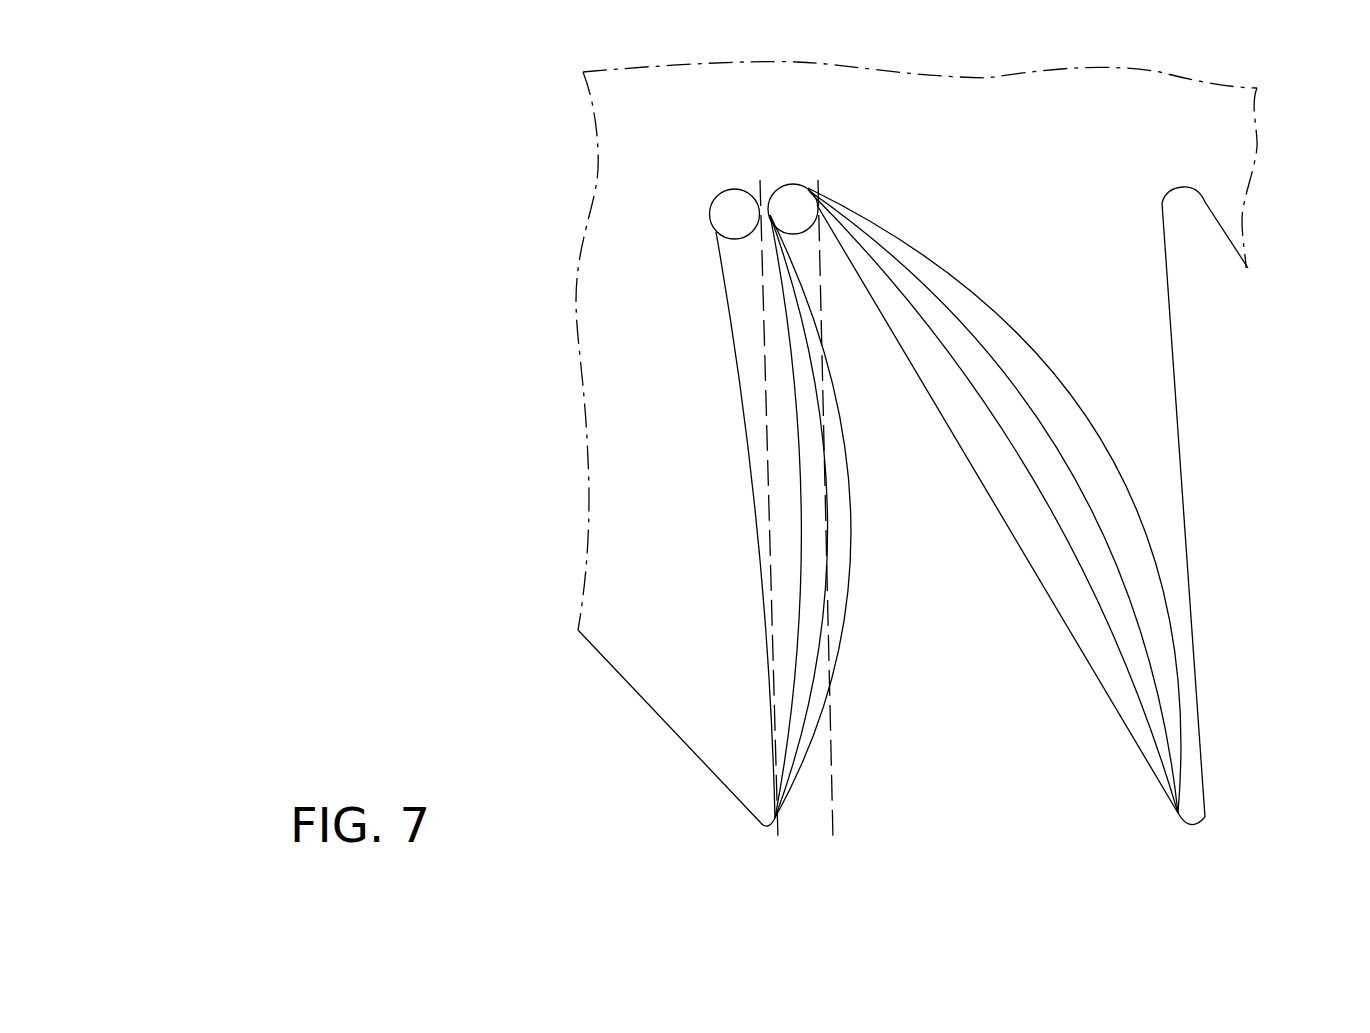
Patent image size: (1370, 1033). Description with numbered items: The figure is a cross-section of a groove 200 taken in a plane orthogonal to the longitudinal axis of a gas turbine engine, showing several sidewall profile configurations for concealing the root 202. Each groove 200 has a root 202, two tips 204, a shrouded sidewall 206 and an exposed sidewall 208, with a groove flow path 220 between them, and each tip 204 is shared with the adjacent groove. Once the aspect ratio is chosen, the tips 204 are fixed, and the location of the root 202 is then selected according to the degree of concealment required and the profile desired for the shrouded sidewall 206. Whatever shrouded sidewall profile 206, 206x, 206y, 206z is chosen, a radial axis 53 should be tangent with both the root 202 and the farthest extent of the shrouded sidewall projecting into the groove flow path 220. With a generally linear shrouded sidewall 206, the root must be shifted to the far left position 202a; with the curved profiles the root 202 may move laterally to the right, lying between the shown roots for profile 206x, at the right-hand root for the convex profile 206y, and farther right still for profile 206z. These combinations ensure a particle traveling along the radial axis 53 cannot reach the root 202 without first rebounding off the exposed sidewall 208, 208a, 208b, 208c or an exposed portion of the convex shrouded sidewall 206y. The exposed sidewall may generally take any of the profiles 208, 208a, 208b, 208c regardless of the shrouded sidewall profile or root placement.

The groove 200 is at (532, 206).
The root 202 is at (794, 185).
The far left root position 202a is at (718, 194).
The tip 204 is at (763, 826).
The shrouded sidewall 206 is at (729, 314).
The shrouded sidewall profile 206x is at (798, 651).
The shrouded sidewall profile 206y is at (813, 689).
The shrouded sidewall profile 206z is at (816, 734).
The exposed sidewall 208 is at (1038, 572).
The exposed sidewall profile 208a is at (1140, 517).
The exposed sidewall profile 208b is at (1075, 477).
The exposed sidewall profile 208c is at (1000, 425).
The groove flow path 220 is at (1234, 283).
The radial axis 53 is at (823, 380).